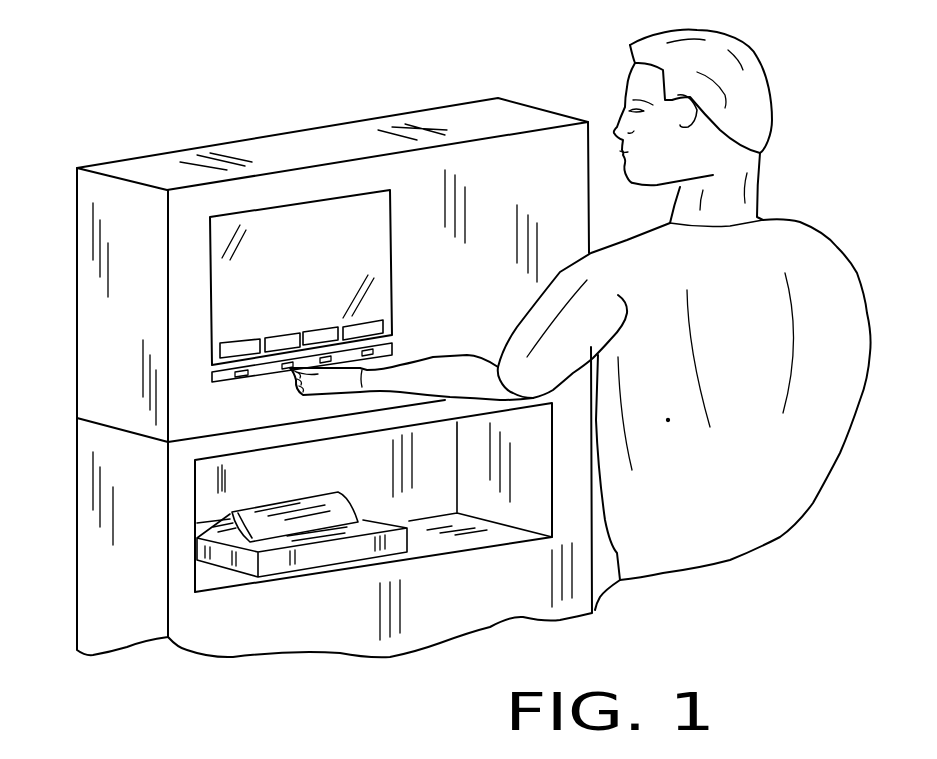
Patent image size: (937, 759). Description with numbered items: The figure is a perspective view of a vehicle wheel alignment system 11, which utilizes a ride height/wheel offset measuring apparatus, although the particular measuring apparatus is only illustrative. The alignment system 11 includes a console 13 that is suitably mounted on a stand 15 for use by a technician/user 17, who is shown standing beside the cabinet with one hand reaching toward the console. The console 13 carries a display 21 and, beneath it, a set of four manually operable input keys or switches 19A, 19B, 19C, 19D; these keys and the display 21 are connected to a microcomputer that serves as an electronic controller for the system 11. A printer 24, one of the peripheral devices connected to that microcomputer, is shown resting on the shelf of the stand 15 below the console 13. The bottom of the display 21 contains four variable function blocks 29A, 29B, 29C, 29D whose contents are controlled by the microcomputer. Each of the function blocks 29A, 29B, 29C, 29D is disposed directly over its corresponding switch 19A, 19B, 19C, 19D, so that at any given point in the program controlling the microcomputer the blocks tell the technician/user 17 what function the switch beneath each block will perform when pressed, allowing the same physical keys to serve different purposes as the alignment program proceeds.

The vehicle wheel alignment system 11 is at (213, 78).
The console 13 is at (438, 107).
The stand 15 is at (76, 520).
The technician/user 17 is at (750, 55).
The display 21 is at (311, 241).
The printer 24 is at (320, 556).
The input key or switch 19A is at (233, 378).
The input key or switch 19B is at (286, 370).
The input key or switch 19C is at (333, 352).
The input key or switch 19D is at (378, 350).
The variable function block 29A is at (230, 343).
The variable function block 29B is at (282, 333).
The variable function block 29C is at (323, 326).
The variable function block 29D is at (362, 327).